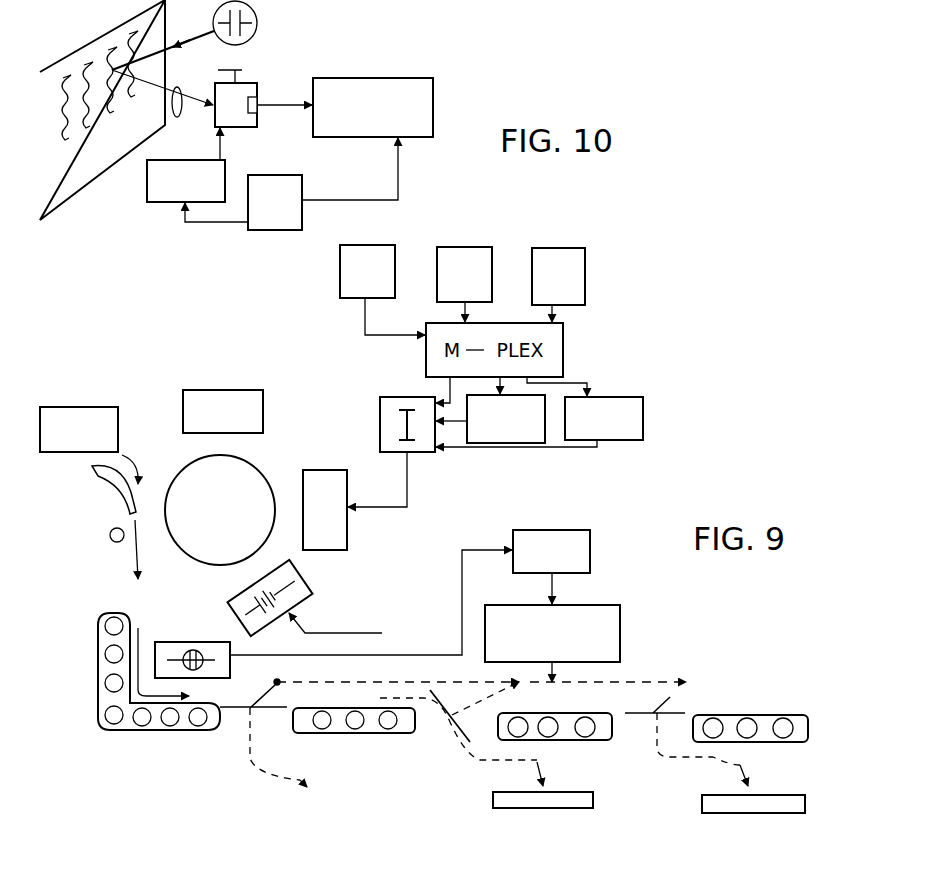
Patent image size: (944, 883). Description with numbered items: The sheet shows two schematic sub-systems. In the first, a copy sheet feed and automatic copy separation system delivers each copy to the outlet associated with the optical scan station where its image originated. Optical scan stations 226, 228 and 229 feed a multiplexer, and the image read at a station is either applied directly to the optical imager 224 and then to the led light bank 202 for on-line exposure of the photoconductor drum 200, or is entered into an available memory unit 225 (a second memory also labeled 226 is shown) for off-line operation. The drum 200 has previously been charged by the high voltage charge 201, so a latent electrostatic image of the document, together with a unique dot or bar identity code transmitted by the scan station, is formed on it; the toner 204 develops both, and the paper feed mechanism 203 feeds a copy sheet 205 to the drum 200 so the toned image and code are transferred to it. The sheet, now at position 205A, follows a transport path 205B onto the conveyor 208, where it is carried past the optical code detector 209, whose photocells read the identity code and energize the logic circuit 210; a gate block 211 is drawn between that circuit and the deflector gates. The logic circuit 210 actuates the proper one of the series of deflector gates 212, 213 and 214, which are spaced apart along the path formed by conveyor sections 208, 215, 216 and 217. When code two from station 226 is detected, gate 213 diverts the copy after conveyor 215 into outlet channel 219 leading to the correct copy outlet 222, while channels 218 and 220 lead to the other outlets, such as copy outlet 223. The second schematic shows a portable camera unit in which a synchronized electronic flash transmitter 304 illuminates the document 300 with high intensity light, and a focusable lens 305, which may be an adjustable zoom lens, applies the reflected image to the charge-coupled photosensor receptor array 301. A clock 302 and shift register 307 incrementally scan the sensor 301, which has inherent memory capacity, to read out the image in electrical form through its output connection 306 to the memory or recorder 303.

In FIG. 10, the document 300 is at (72, 168).
In FIG. 10, the charge-coupled photosensor receptor array 301 is at (251, 95).
In FIG. 10, the clock 302 is at (290, 222).
In FIG. 10, the memory or storage 303 is at (387, 90).
In FIG. 10, the synchronized electronic flash transmitter 304 is at (245, 18).
In FIG. 10, the focusable lens 305 is at (181, 97).
In FIG. 10, the CCD output terminal 306 is at (226, 66).
In FIG. 10, the shift register 307 is at (150, 197).
In FIG. 9, the photoconductor drum 200 is at (246, 490).
In FIG. 9, the high voltage charge 201 is at (298, 593).
In FIG. 9, the led light bank 202 is at (333, 535).
In FIG. 9, the paper feed mechanism 203 is at (63, 412).
In FIG. 9, the toner 204 is at (254, 405).
In FIG. 9, the copy sheet 205 is at (133, 456).
In FIG. 9, the copy sheet position 205A is at (125, 548).
In FIG. 9, the paper transport path 205B is at (138, 702).
In FIG. 9, the conveyor 208 is at (108, 655).
In FIG. 9, the optical code detector 209 is at (210, 650).
In FIG. 9, the logic circuit 210 is at (572, 533).
In FIG. 9, the gate 211 is at (600, 620).
In FIG. 9, the deflector gate 212 is at (250, 712).
In FIG. 9, the deflector gate 213 is at (455, 718).
In FIG. 9, the deflector gate 214 is at (642, 717).
In FIG. 9, the conveyor section 215 is at (322, 728).
In FIG. 9, the conveyor section 216 is at (548, 740).
In FIG. 9, the conveyor section 217 is at (742, 738).
In FIG. 9, the first paper path 218 is at (252, 760).
In FIG. 9, the outlet channel 219 is at (510, 765).
In FIG. 9, the third paper path 220 is at (690, 765).
In FIG. 9, the copy outlet 222 is at (560, 797).
In FIG. 9, the copy outlet 223 is at (750, 803).
In FIG. 9, the optical imager 224 is at (380, 425).
In FIG. 9, the memory unit 225 is at (527, 430).
In FIG. 9, the optical scan station 226 is at (470, 256).
In FIG. 9, the optical scan station 228 is at (372, 250).
In FIG. 9, the optical scan station 229 is at (557, 260).